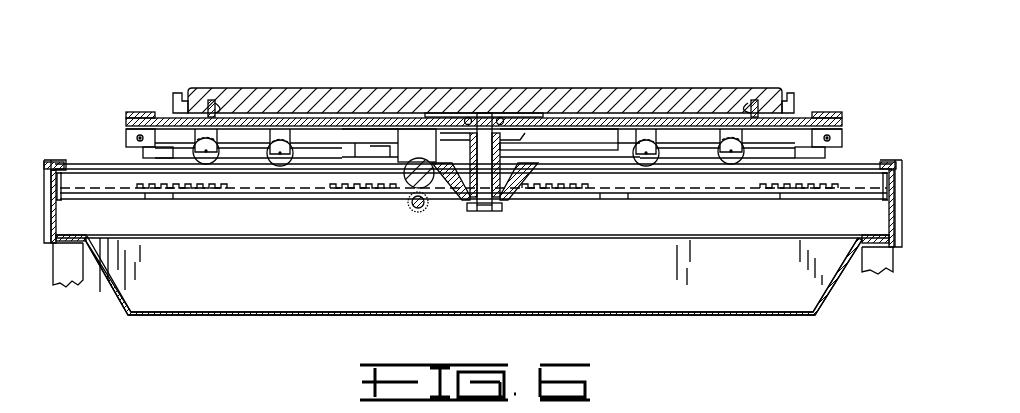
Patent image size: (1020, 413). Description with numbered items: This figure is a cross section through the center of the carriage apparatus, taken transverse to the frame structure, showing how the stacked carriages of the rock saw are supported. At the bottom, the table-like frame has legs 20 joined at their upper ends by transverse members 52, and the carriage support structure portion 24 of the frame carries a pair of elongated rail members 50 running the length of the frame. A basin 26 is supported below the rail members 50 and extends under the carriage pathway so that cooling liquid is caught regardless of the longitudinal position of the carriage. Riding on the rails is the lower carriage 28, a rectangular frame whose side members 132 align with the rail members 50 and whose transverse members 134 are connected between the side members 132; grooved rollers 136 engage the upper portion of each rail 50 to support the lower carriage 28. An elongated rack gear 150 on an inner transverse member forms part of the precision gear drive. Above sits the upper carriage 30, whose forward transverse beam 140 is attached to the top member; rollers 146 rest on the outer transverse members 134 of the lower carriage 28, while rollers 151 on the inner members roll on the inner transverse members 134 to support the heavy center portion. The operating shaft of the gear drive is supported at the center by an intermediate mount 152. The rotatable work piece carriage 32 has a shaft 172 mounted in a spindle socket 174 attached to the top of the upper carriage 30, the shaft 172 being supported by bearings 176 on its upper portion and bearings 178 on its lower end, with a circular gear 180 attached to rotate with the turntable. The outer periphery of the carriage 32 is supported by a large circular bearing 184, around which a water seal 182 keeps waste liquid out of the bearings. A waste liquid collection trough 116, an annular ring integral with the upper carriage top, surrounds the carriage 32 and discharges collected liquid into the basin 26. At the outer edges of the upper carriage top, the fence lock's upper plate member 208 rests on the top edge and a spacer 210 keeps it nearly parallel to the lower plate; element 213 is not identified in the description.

The legs 20 is at (76, 282).
The carriage support structure portion 24 is at (66, 290).
The basin 26 is at (296, 285).
The lower carriage 28 is at (43, 150).
The upper carriage 30 is at (130, 103).
The work piece carriage 32 is at (284, 84).
The rail members 50 is at (58, 211).
The transverse members 52 is at (315, 222).
The waste liquid collection trough 116 is at (177, 92).
The side members 132 is at (42, 168).
The transverse members 134 is at (262, 174).
The rollers 136 is at (58, 172).
The forward transverse beam 140 is at (418, 212).
The rollers 146 is at (268, 151).
The rack gear 150 is at (220, 183).
The rollers 151 is at (193, 147).
The intermediate mount 152 is at (408, 129).
The shaft 172 is at (487, 112).
The spindle socket 174 is at (503, 150).
The bearings 176 is at (466, 118).
The bearings 178 is at (504, 197).
The circular gear 180 is at (455, 190).
The water seal 182 is at (211, 100).
The circular bearing 184 is at (216, 106).
The upper plate member 208 is at (140, 112).
The spacer 210 is at (126, 121).
The clamp block 213 is at (128, 139).